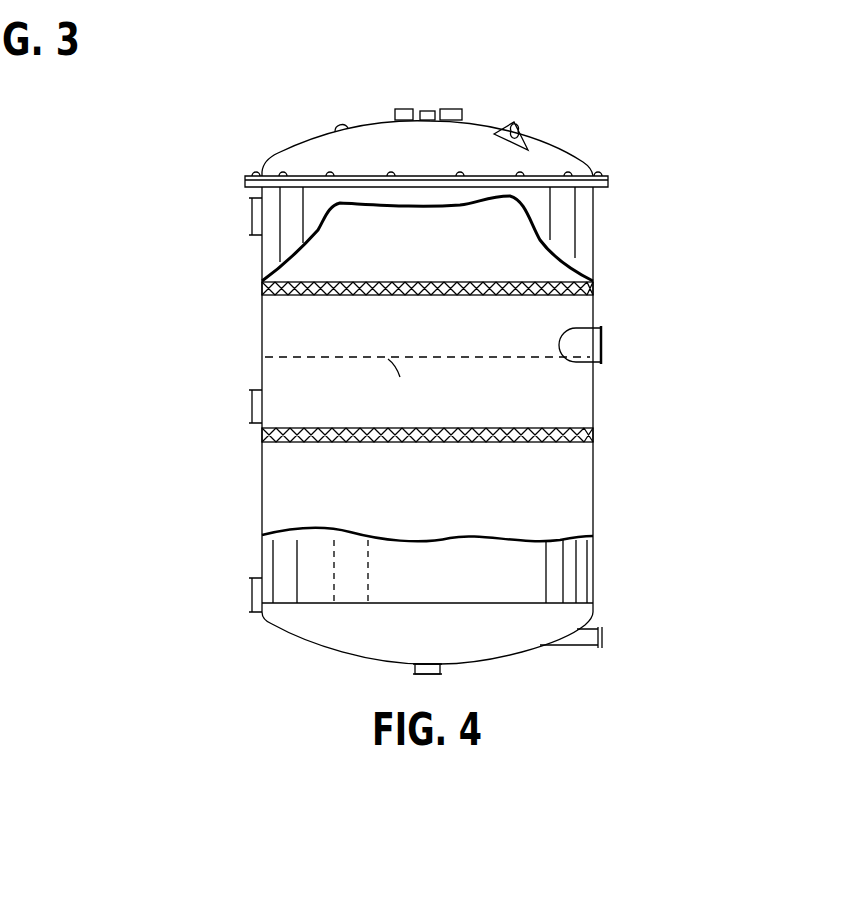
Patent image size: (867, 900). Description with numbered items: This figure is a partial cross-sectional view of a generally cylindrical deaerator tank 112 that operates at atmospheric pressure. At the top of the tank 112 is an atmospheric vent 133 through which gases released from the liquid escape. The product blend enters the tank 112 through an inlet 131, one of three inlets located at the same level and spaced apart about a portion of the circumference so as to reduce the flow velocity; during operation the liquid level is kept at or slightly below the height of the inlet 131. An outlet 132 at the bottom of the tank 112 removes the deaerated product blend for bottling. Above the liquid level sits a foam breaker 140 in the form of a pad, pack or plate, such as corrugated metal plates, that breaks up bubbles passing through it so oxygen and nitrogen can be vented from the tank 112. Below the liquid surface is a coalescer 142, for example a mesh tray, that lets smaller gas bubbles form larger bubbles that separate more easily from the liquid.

The deaerator tank 112 is at (192, 250).
The inlet 131 is at (588, 352).
The outlet 132 is at (425, 675).
The atmospheric vent 133 is at (430, 108).
The foam breaker 140 is at (330, 292).
The coalescer 142 is at (305, 432).